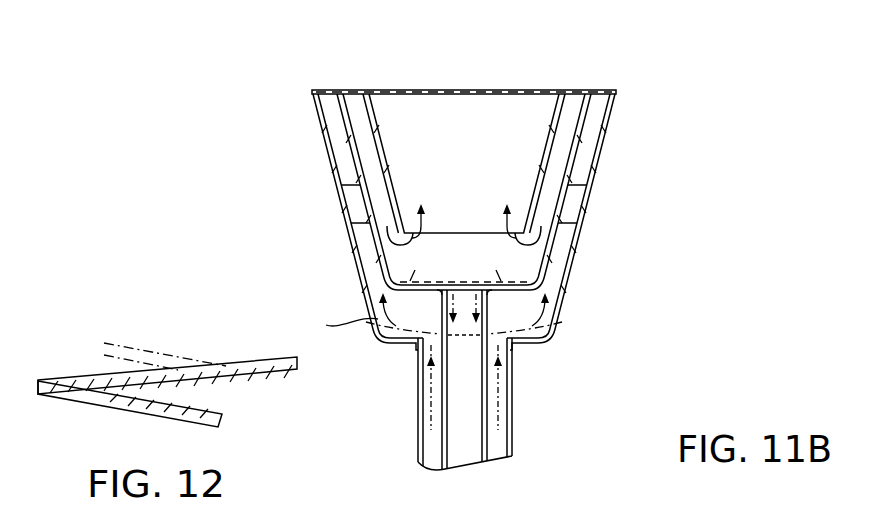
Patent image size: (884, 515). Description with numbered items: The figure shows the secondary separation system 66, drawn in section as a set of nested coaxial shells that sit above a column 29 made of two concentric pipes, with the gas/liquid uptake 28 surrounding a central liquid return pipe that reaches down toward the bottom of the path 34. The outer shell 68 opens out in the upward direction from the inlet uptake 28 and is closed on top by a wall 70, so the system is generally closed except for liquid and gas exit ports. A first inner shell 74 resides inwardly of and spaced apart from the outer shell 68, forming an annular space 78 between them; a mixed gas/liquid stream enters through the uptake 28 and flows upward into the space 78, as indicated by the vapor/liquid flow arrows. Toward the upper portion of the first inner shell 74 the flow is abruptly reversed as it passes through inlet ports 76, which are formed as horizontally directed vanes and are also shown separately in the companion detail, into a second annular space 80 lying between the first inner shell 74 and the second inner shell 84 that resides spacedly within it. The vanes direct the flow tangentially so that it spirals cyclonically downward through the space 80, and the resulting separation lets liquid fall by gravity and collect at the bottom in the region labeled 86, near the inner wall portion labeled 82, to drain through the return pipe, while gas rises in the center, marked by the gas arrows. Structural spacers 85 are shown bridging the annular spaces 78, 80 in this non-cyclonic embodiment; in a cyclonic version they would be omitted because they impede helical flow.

In FIG. 11B, the secondary separation system 66 is at (303, 168).
In FIG. 11B, the outer shell 68 is at (318, 118).
In FIG. 11B, the wall 70 is at (378, 90).
In FIG. 11B, the first inner shell 74 is at (568, 265).
In FIG. 12, the inlet ports 76 is at (202, 427).
In FIG. 11B, the annular space 78 is at (553, 280).
In FIG. 11B, the second annular space 80 is at (563, 145).
In FIG. 11B, the inner wall 82 is at (537, 113).
In FIG. 11B, the second inner shell 84 is at (537, 221).
In FIG. 11B, the structural spacers 85 is at (578, 171).
In FIG. 11B, the liquid collection space 86 is at (433, 241).
In FIG. 11B, the gas/liquid uptake 28 is at (495, 420).
In FIG. 11B, the column 29 is at (522, 428).
In FIG. 11B, the bottom of the path 34 is at (463, 456).